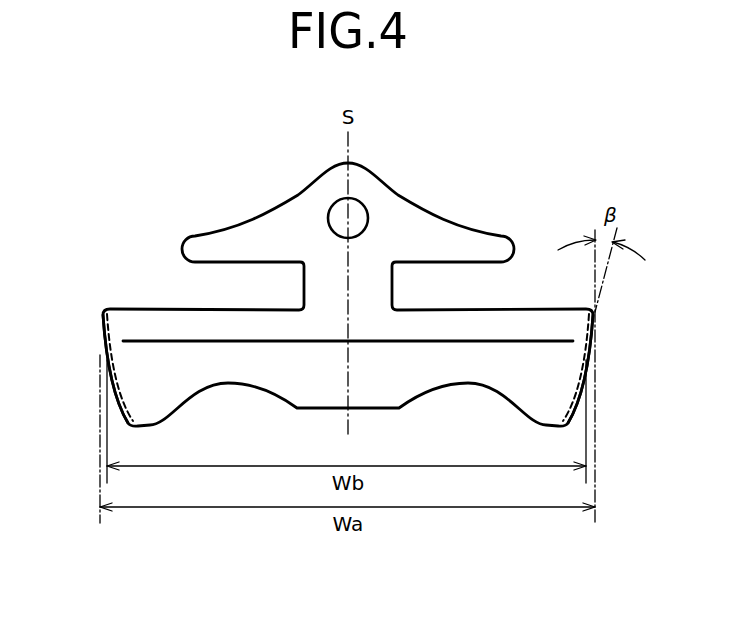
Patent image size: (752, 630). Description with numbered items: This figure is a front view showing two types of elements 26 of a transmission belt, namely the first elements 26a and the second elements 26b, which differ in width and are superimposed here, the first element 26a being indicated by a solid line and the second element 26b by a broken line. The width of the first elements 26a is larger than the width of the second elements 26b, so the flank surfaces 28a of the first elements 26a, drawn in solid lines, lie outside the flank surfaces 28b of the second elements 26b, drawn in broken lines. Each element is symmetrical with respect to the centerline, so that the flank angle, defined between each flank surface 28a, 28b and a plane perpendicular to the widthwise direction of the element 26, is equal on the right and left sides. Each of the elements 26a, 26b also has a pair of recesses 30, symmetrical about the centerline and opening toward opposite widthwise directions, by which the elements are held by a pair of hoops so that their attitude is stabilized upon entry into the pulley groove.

The element 26 is at (348, 268).
The first element 26a is at (348, 294).
The second element 26b is at (428, 158).
The recess 30 is at (171, 269).
The flank surface 28a is at (115, 403).
The flank surface 28b is at (110, 376).